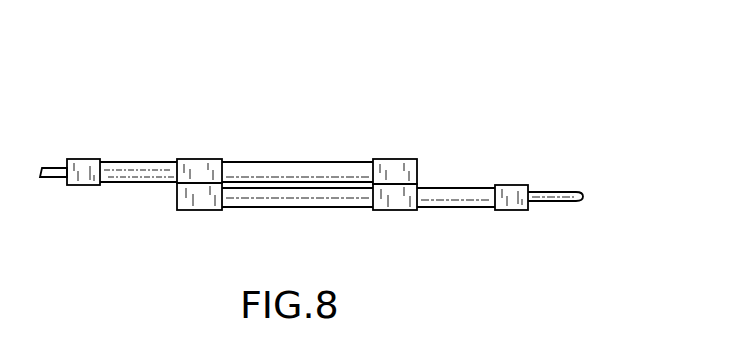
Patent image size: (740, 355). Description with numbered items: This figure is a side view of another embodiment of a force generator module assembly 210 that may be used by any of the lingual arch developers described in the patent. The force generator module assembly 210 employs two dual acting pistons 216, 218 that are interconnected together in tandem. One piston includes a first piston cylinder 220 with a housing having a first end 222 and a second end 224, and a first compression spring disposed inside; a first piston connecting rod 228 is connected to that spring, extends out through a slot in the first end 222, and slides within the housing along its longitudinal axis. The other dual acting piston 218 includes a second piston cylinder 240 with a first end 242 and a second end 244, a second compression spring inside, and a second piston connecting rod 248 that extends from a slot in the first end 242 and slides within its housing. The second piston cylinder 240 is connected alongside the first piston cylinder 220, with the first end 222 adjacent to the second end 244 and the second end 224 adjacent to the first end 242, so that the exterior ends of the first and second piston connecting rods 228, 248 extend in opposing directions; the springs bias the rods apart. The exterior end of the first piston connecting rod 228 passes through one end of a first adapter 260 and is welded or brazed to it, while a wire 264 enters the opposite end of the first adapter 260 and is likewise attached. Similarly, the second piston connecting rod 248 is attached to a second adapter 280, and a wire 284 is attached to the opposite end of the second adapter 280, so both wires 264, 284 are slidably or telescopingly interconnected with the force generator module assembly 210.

The force generator module assembly 210 is at (444, 83).
The dual acting piston 216 is at (158, 200).
The dual acting piston 218 is at (419, 164).
The first piston cylinder 220 is at (352, 200).
The first end 222 is at (415, 210).
The second end 224 is at (183, 205).
The first piston connecting rod 228 is at (477, 210).
The second piston cylinder 240 is at (308, 164).
The first end 242 is at (204, 166).
The second end 244 is at (386, 165).
The second piston connecting rod 248 is at (153, 164).
The first adapter 260 is at (521, 185).
The wire 264 is at (553, 203).
The second adapter 280 is at (83, 186).
The wire 284 is at (57, 163).